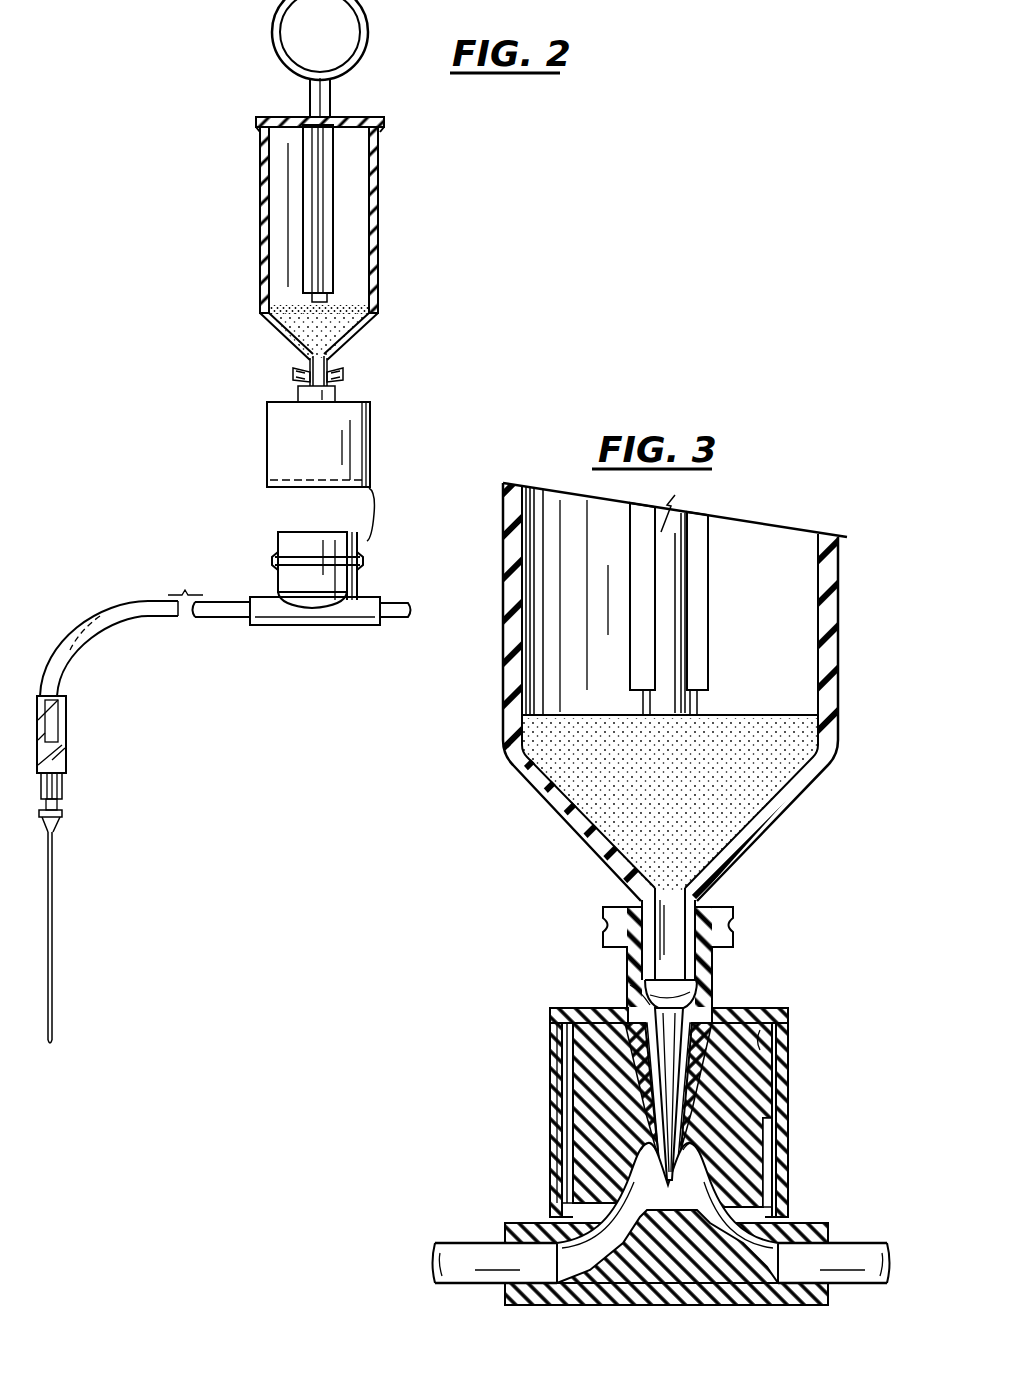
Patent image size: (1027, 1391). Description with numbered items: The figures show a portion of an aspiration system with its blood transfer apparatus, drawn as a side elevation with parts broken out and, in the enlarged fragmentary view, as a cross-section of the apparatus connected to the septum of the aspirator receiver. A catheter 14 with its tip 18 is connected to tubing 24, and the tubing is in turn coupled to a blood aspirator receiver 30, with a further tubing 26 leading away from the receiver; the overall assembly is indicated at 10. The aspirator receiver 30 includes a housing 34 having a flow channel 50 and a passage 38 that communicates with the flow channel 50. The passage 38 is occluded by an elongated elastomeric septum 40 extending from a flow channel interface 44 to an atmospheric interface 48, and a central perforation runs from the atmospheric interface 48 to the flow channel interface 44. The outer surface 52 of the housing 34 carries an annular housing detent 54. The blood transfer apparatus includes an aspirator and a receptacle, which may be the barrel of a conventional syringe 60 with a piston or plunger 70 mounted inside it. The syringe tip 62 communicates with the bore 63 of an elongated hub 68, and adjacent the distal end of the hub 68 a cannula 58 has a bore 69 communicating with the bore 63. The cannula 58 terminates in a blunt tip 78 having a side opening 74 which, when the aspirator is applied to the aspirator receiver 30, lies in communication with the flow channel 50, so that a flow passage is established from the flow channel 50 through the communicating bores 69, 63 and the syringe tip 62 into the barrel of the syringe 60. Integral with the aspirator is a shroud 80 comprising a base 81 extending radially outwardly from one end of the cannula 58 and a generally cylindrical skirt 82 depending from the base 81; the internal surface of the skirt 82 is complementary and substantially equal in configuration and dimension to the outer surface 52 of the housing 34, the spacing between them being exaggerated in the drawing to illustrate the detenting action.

In FIG. 2, the fluid dispensing apparatus 10 is at (230, 392).
In FIG. 2, the catheter 14 is at (92, 864).
In FIG. 2, the needle tip 18 is at (52, 1043).
In FIG. 2, the tubing 24 is at (82, 623).
In FIG. 3, the tubing 26 is at (533, 1257).
In FIG. 2, the blood aspirator receiver 30 is at (262, 528).
In FIG. 3, the blood aspirator receiver 30 is at (754, 1050).
In FIG. 3, the housing 34 is at (748, 1103).
In FIG. 3, the passage 38 is at (622, 1066).
In FIG. 3, the septum 40 is at (622, 1013).
In FIG. 2, the flow channel interface 44 is at (285, 532).
In FIG. 3, the flow channel interface 44 is at (680, 1162).
In FIG. 3, the atmospheric interface 48 is at (720, 1017).
In FIG. 3, the flow channel 50 is at (633, 1207).
In FIG. 2, the outer surface 52 is at (283, 584).
In FIG. 3, the outer surface 52 is at (766, 1134).
In FIG. 2, the annular housing detent 54 is at (347, 560).
In FIG. 3, the annular housing detent 54 is at (573, 1100).
In FIG. 3, the cannula 58 is at (748, 1075).
In FIG. 2, the syringe 60 is at (412, 191).
In FIG. 3, the syringe tip 62 is at (678, 937).
In FIG. 3, the bore 63 is at (688, 985).
In FIG. 3, the hub 68 is at (782, 957).
In FIG. 3, the bore 69 is at (648, 988).
In FIG. 3, the plunger 70 is at (766, 822).
In FIG. 3, the side opening 74 is at (642, 1150).
In FIG. 3, the blunt tip 78 is at (700, 1193).
In FIG. 3, the shroud 80 is at (552, 1048).
In FIG. 3, the base 81 is at (760, 1028).
In FIG. 3, the skirt 82 is at (555, 1130).